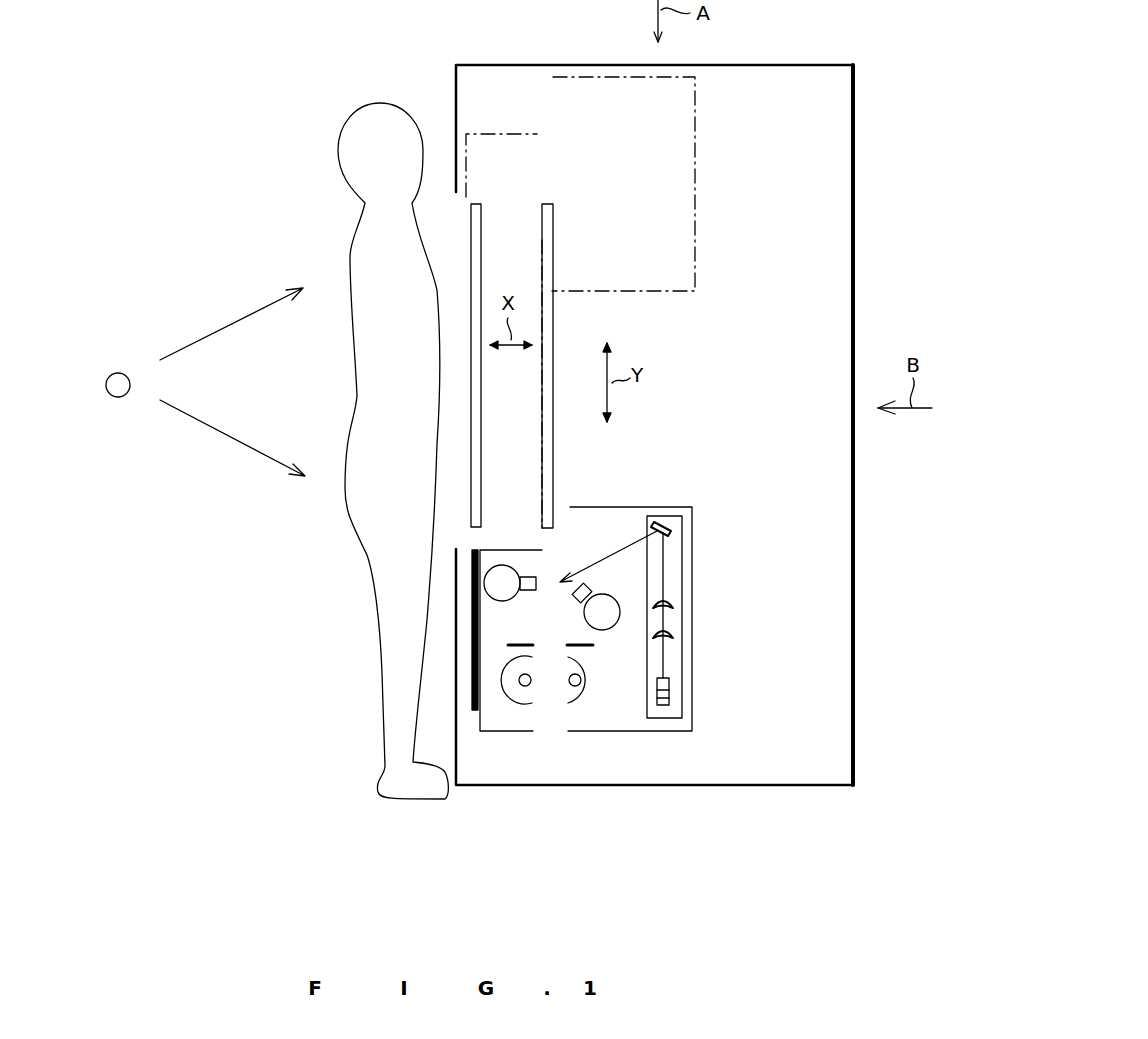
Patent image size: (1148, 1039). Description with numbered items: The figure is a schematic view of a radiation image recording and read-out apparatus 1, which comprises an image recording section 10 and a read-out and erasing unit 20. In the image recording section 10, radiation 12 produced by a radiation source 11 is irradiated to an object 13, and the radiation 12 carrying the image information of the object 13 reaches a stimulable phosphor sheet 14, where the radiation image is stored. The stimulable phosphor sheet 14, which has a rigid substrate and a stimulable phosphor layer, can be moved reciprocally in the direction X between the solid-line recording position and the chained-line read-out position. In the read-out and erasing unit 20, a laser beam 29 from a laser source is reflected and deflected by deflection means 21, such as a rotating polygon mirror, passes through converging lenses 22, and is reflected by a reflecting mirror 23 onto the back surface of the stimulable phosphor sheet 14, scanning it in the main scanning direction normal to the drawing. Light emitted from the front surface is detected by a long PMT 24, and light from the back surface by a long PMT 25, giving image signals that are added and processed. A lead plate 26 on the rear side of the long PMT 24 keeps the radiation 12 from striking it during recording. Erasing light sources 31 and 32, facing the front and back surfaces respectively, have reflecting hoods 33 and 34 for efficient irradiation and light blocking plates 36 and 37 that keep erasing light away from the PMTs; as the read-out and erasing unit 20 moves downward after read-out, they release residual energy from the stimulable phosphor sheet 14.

The radiation image recording and read-out apparatus 1 is at (858, 93).
The image recording section 10 is at (427, 107).
The radiation source 11 is at (118, 372).
The radiation 12 is at (236, 320).
The object 13 is at (355, 225).
The stimulable phosphor sheet 14 is at (481, 243).
The read-out and erasing unit 20 is at (648, 490).
The deflection means 21 is at (670, 700).
The converging lenses 22 is at (674, 633).
The reflecting mirror 23 is at (673, 522).
The long PMT 24 is at (500, 600).
The long PMT 25 is at (615, 625).
The lead plate 26 is at (472, 640).
The laser beam 29 is at (602, 560).
The erasing light source 31 is at (537, 682).
The erasing light source 32 is at (566, 690).
The reflecting hood 33 is at (523, 707).
The reflecting hood 34 is at (583, 703).
The light blocking plate 36 is at (530, 643).
The light blocking plate 37 is at (590, 648).